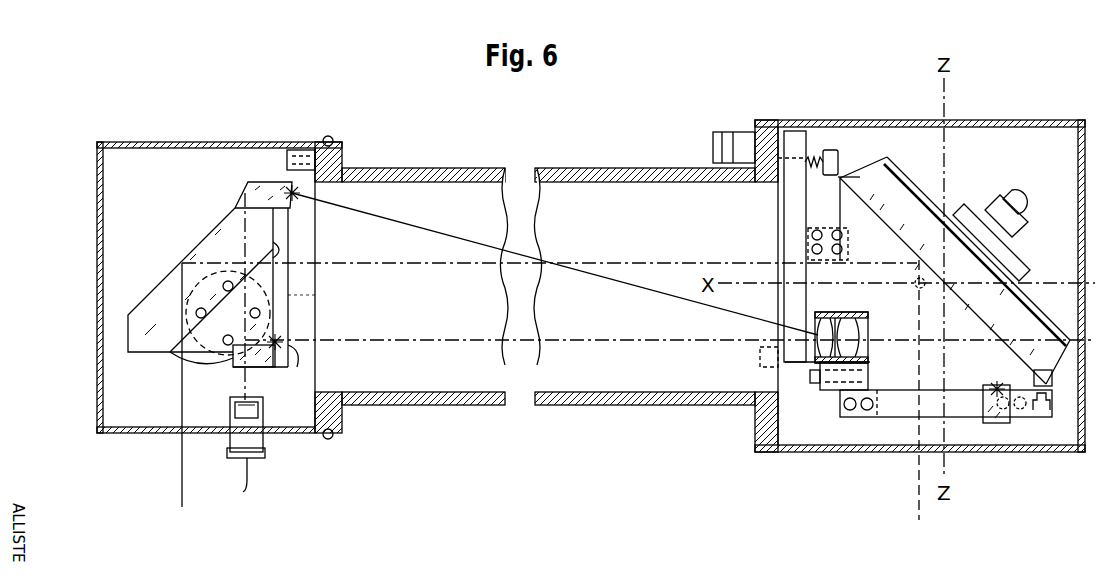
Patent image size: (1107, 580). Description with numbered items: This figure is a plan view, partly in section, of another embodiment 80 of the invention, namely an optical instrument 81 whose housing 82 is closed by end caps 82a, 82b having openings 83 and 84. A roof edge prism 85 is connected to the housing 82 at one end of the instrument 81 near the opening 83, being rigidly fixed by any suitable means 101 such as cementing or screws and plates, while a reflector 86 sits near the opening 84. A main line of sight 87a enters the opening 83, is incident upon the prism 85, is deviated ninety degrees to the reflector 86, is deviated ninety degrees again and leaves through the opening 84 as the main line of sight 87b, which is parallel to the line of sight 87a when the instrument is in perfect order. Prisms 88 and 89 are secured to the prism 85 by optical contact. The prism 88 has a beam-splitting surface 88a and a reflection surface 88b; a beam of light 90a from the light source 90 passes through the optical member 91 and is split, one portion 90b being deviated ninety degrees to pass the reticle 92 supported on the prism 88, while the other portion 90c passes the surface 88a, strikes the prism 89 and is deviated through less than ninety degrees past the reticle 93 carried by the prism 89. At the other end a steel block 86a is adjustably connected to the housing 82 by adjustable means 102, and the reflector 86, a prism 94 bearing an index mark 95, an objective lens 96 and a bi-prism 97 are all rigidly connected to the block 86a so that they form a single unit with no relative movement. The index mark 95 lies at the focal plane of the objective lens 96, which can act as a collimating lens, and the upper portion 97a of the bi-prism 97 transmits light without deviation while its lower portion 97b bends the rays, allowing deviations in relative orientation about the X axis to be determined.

The embodiment 80 is at (434, 163).
The optical instrument 81 is at (424, 412).
The housing 82 is at (578, 172).
The end cap 82a is at (118, 145).
The end cap 82b is at (958, 122).
The opening 83 is at (157, 430).
The opening 84 is at (882, 447).
The roof edge prism 85 is at (148, 300).
The reflector 86 is at (872, 177).
The steel block 86a is at (963, 190).
The main line of sight 87a is at (185, 482).
The main line of sight 87b is at (920, 508).
The prism 88 is at (288, 366).
The beam-splitting surface 88a is at (275, 324).
The reflection surface 88b is at (277, 296).
The prism 89 is at (255, 190).
The light source 90 is at (257, 434).
The beam of light 90a is at (245, 378).
The light path portion 90b is at (422, 341).
The light path portion 90c is at (245, 237).
The optical member 91 is at (257, 408).
The reticle 92 is at (283, 343).
The reticle 93 is at (296, 193).
The prism 94 is at (1002, 423).
The indexing means 95 is at (997, 423).
The objective lens 96 is at (842, 367).
The bi-prism 97 is at (818, 340).
The upper portion 97a is at (818, 332).
The lower portion 97b is at (822, 363).
The connecting means 101 is at (180, 329).
The adjustable means 102 is at (793, 138).